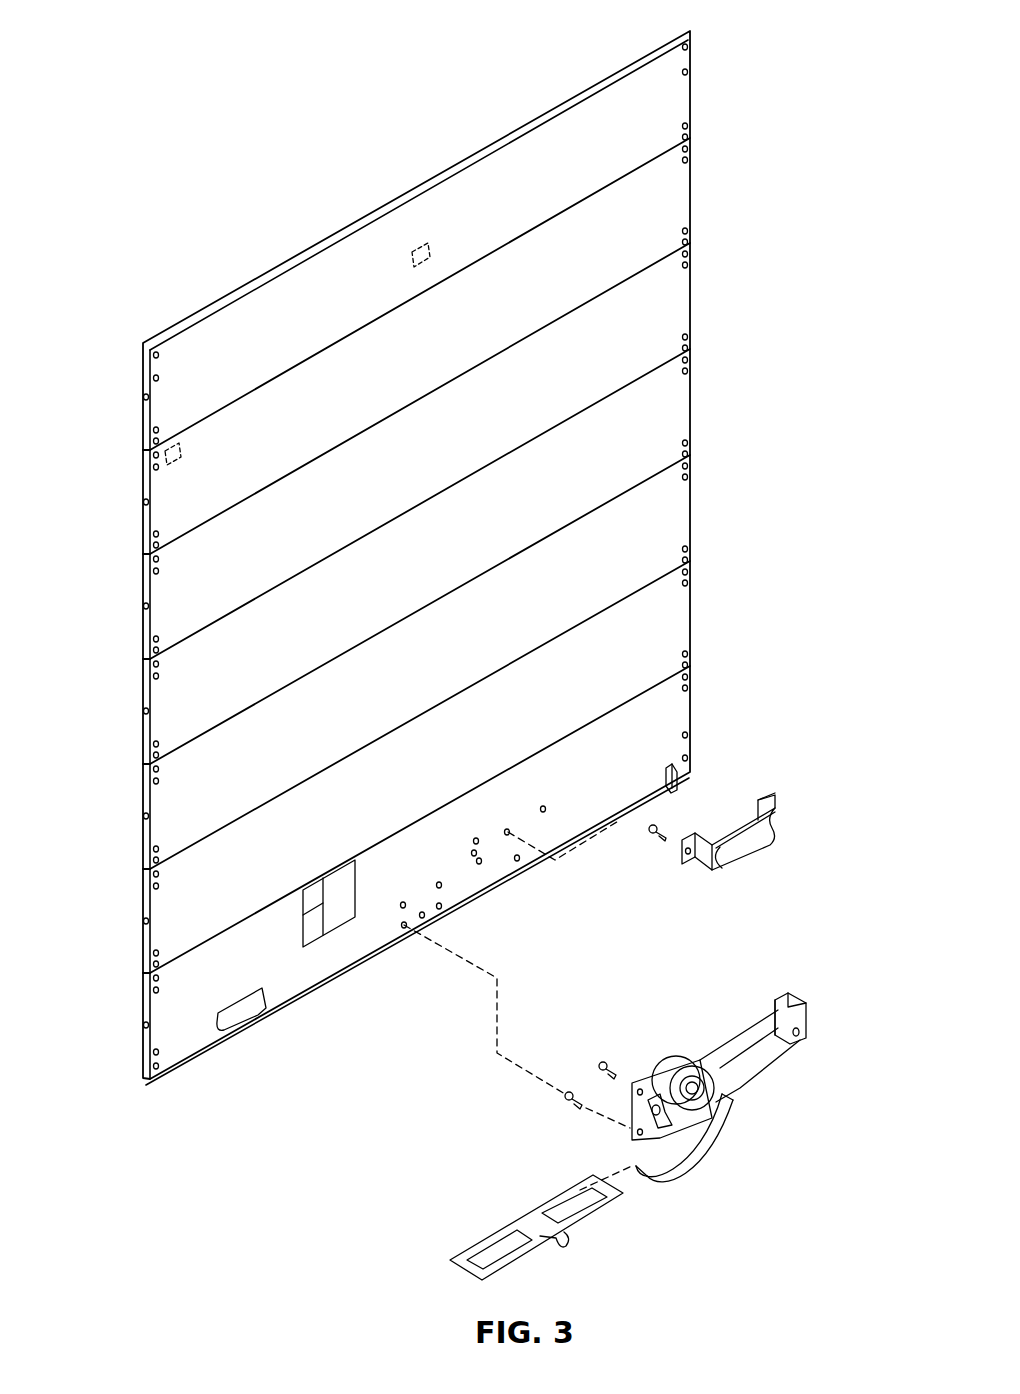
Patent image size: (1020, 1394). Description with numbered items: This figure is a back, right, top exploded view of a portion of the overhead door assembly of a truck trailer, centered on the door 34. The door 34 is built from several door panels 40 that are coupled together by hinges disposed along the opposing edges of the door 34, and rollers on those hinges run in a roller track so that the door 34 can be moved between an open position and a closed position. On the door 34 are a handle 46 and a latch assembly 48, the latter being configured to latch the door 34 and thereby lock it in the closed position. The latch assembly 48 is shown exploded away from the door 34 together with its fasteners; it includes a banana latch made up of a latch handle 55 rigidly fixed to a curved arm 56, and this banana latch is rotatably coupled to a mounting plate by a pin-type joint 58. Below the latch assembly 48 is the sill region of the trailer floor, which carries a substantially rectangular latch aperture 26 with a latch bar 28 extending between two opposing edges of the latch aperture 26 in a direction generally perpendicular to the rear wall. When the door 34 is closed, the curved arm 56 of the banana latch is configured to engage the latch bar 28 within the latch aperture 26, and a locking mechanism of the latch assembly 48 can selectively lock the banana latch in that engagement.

The door 34 is at (803, 157).
The door panels 40 is at (168, 412).
The handle 46 is at (742, 843).
The latch assembly 48 is at (788, 1112).
The latch handle 55 is at (784, 1036).
The curved arm 56 is at (668, 1168).
The pin-type joint 58 is at (697, 1092).
The latch aperture 26 is at (568, 1205).
The latch bar 28 is at (568, 1246).